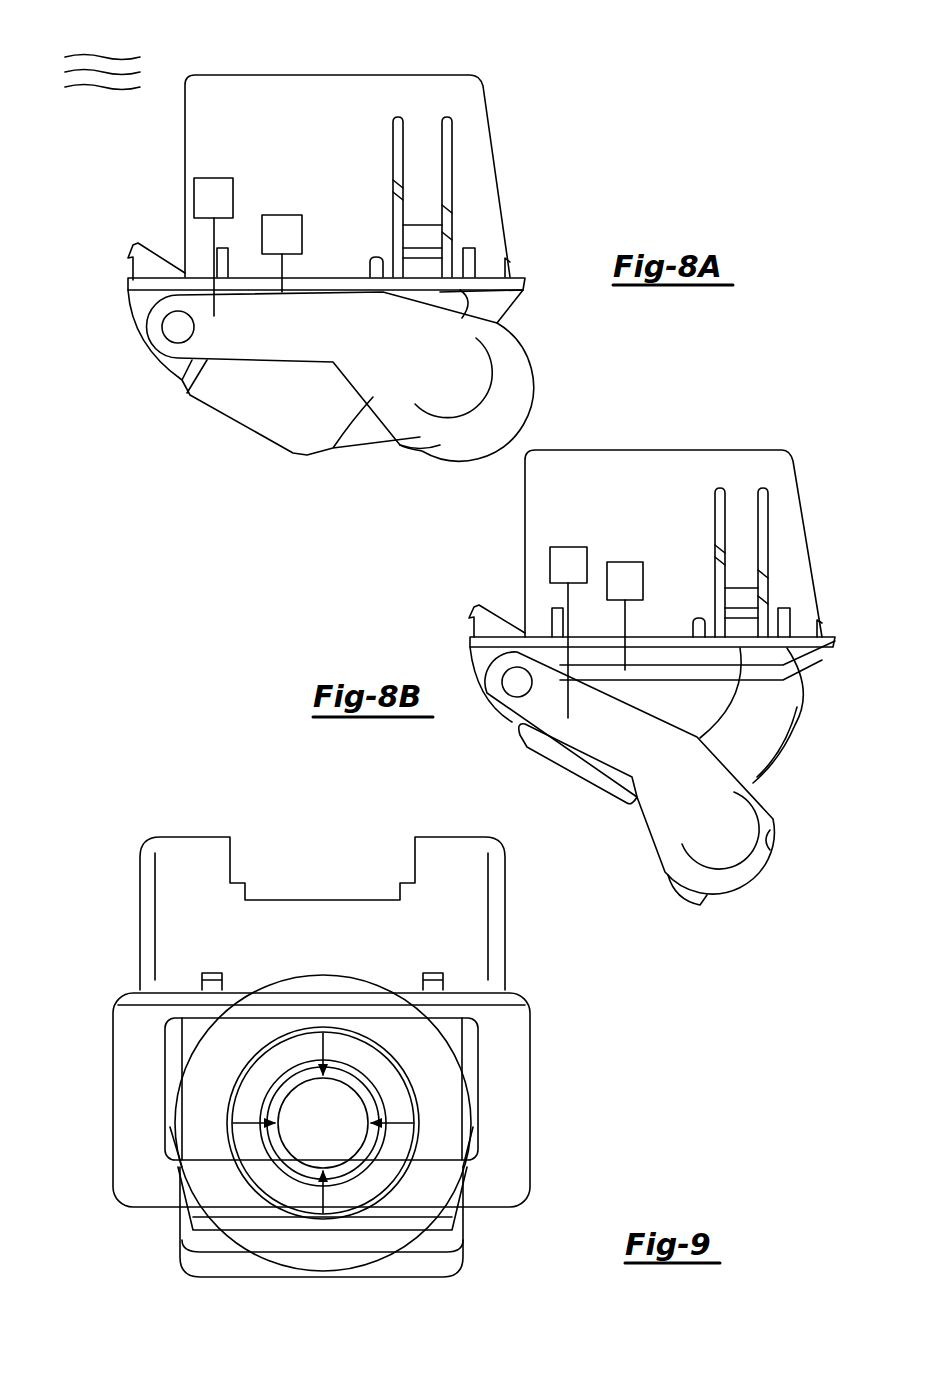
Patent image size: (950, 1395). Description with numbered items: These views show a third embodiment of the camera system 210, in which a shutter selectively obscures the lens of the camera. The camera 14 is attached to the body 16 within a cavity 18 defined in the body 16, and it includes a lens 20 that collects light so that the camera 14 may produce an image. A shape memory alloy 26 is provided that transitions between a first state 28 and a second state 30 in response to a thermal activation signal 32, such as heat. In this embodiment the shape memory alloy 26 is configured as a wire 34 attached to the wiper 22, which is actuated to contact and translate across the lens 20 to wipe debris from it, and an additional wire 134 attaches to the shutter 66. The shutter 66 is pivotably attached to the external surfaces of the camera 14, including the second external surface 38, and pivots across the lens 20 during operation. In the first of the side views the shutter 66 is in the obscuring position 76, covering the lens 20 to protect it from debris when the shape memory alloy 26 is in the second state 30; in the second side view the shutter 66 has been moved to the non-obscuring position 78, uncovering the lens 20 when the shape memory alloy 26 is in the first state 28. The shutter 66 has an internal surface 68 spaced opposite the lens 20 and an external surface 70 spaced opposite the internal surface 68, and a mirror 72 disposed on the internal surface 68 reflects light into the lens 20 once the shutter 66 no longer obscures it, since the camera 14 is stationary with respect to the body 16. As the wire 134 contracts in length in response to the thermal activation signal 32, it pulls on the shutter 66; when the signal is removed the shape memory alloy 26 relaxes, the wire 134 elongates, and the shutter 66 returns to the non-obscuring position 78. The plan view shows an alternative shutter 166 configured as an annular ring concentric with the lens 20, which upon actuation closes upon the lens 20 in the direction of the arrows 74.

In FIG. 8A, the camera system 210 is at (176, 36).
In FIG. 8B, the camera system 210 is at (777, 407).
In FIG. 9, the camera system 210 is at (129, 788).
In FIG. 8A, the camera 14 is at (295, 457).
In FIG. 8B, the camera 14 is at (567, 773).
In FIG. 9, the camera 14 is at (450, 1270).
In FIG. 8A, the body 16 is at (497, 170).
In FIG. 8B, the body 16 is at (810, 533).
In FIG. 9, the body 16 is at (505, 925).
In FIG. 8A, the cavity 18 is at (528, 321).
In FIG. 8B, the cavity 18 is at (841, 676).
In FIG. 9, the cavity 18 is at (474, 1044).
In FIG. 8B, the lens 20 is at (788, 746).
In FIG. 9, the lens 20 is at (333, 1134).
In FIG. 8A, the wiper 22 is at (511, 296).
In FIG. 8B, the wiper 22 is at (822, 657).
In FIG. 9, the wiper 22 is at (460, 1243).
In FIG. 8A, the shape memory alloy 26 is at (297, 247).
In FIG. 8B, the shape memory alloy 26 is at (561, 632).
In FIG. 8B, the first state 28 is at (503, 606).
In FIG. 8A, the second state 30 is at (155, 220).
In FIG. 8A, the thermal activation signal 32 is at (88, 90).
In FIG. 8A, the wire 34 is at (283, 268).
In FIG. 8B, the wire 34 is at (627, 620).
In FIG. 8A, the second external surface 38 is at (285, 408).
In FIG. 8A, the shutter 66 is at (467, 438).
In FIG. 8B, the shutter 66 is at (755, 877).
In FIG. 8B, the internal surface 68 is at (772, 837).
In FIG. 8B, the external surface 70 is at (667, 863).
In FIG. 8A, the mirror 72 is at (470, 404).
In FIG. 8B, the mirror 72 is at (730, 863).
In FIG. 9, the arrows 74 is at (322, 1047).
In FIG. 8A, the obscuring position 76 is at (526, 398).
In FIG. 8B, the non-obscuring position 78 is at (806, 886).
In FIG. 8A, the additional wire 134 is at (215, 233).
In FIG. 8B, the additional wire 134 is at (552, 602).
In FIG. 9, the shutter 166 is at (318, 973).